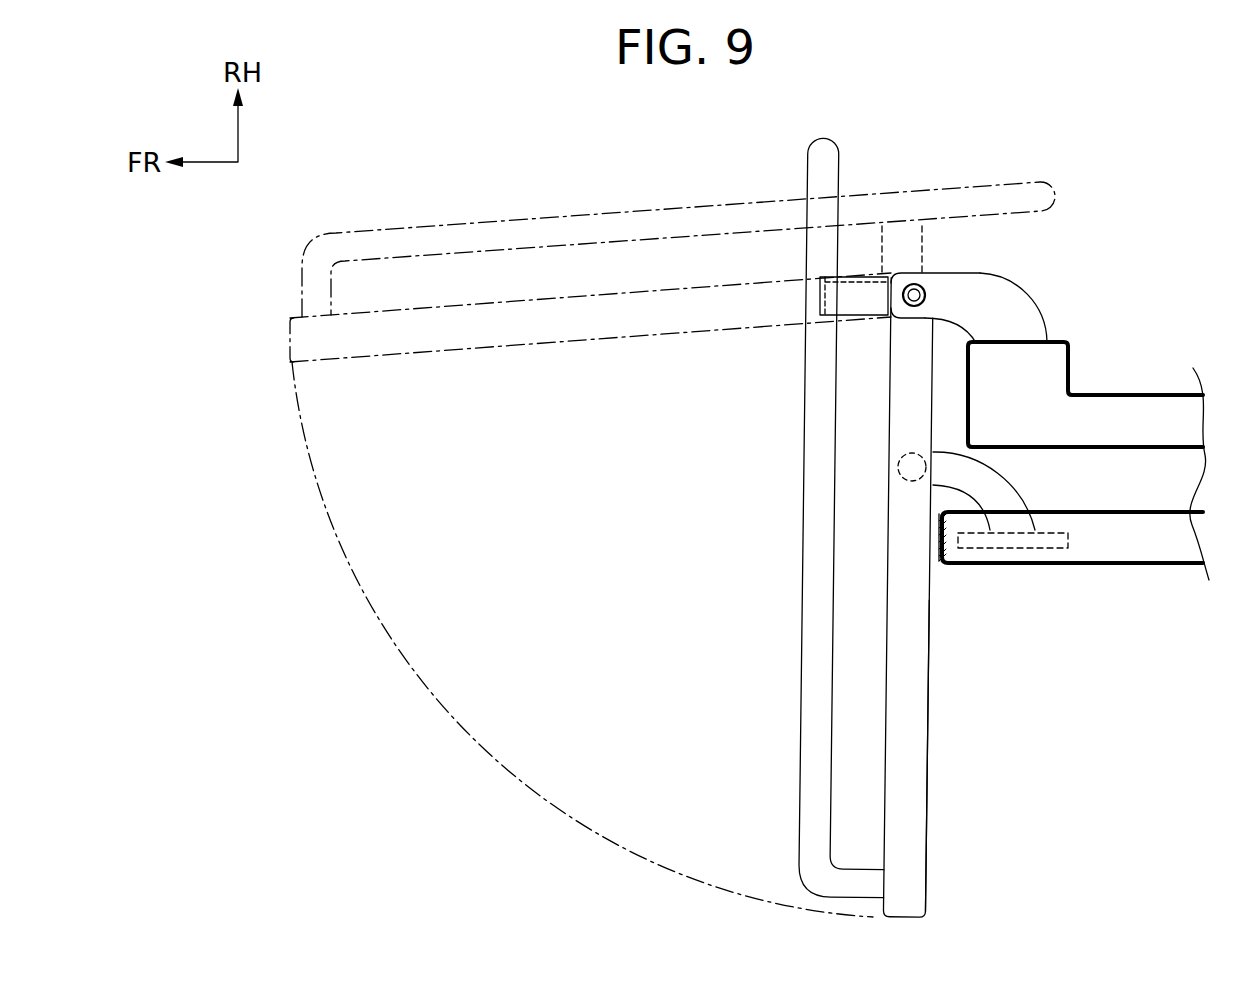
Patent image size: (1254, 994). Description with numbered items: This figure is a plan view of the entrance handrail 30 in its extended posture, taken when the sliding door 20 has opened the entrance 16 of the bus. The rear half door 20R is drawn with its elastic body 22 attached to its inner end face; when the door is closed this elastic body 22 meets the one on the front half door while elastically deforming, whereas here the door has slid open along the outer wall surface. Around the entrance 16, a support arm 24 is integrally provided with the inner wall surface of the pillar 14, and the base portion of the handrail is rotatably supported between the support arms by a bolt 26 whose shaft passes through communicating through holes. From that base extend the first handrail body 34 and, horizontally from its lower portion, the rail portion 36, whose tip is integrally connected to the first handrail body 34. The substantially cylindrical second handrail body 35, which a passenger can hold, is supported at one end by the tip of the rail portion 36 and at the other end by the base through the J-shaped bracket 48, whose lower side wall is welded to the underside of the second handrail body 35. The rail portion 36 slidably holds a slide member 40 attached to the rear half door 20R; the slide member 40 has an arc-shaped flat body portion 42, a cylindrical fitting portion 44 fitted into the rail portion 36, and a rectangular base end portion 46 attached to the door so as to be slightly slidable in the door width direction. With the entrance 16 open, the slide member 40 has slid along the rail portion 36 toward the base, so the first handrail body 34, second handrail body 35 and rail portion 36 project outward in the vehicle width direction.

The pillar 14 is at (1069, 354).
The entrance 16 is at (959, 392).
The rear half door 20R is at (1081, 580).
The sliding door 20 is at (1113, 567).
The elastic body 22 is at (943, 567).
The support arm 24 is at (1017, 293).
The bolt 26 is at (913, 286).
The entrance handrail 30 is at (865, 527).
The first handrail body 34 is at (904, 690).
The second handrail body 35 is at (807, 625).
The rail portion 36 is at (928, 752).
The slide member 40 is at (1020, 483).
The body portion 42 is at (984, 472).
The fitting portion 44 is at (906, 465).
The base end portion 46 is at (1018, 548).
The bracket 48 is at (862, 292).